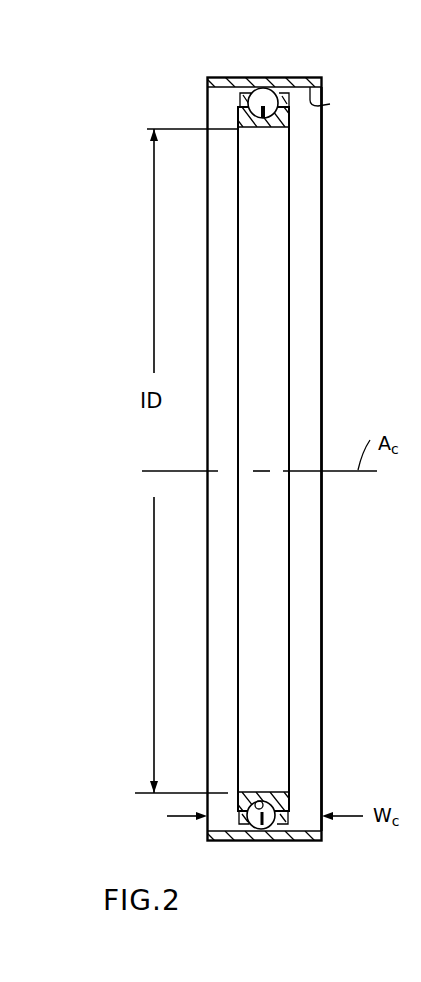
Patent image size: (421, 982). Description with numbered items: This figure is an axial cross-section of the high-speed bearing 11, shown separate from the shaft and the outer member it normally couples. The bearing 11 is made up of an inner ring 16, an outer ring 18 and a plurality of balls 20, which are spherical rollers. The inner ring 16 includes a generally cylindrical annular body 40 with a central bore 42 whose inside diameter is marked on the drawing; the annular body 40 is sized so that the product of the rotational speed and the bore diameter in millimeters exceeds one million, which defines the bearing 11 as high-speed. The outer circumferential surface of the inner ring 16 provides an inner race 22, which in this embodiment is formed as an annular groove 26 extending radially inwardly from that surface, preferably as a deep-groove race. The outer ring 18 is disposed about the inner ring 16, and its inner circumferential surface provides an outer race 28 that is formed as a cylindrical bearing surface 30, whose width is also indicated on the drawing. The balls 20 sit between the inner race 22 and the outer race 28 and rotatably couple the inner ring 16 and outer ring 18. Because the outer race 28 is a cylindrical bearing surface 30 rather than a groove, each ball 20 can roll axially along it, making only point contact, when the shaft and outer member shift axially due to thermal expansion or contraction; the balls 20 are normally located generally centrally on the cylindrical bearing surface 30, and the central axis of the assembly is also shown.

The bearing 11 is at (110, 156).
The inner ring 16 is at (306, 325).
The outer ring 18 is at (206, 71).
The balls 20 is at (263, 97).
The inner race 22 is at (266, 103).
The annular groove 26 is at (257, 801).
The outer race 28 is at (320, 185).
The cylindrical bearing surface 30 is at (330, 104).
The annular body 40 is at (294, 761).
The bore 42 is at (275, 742).